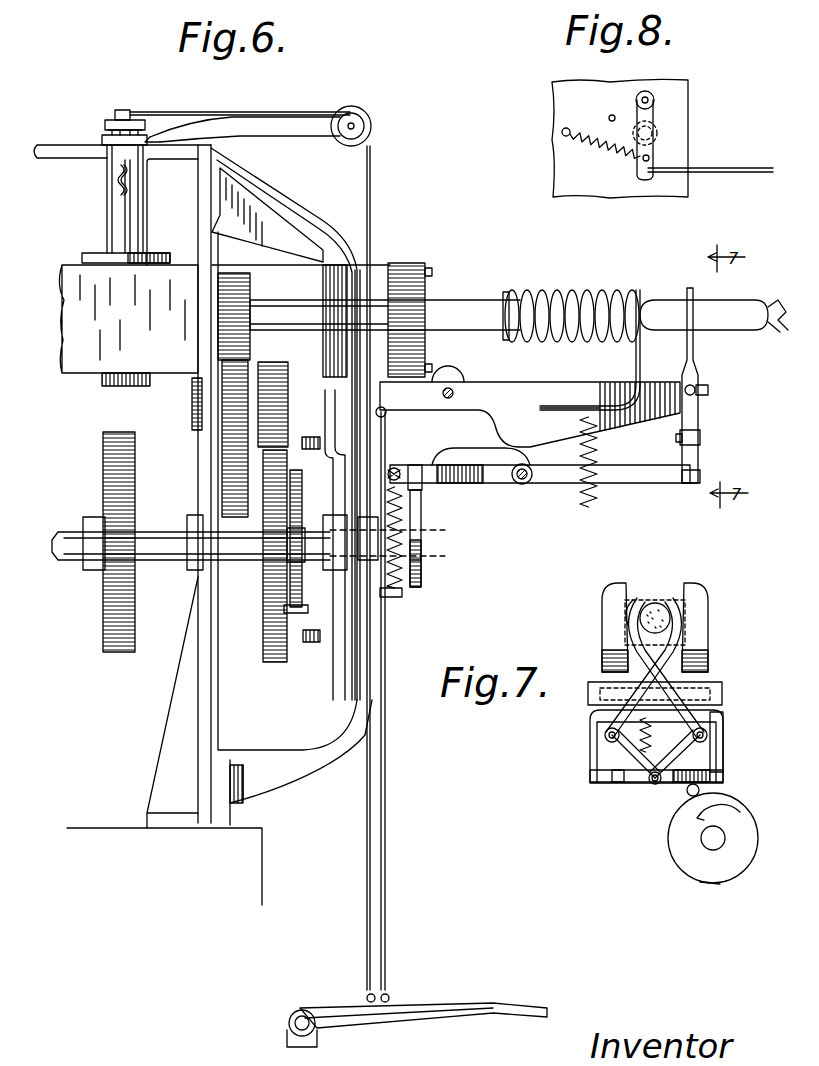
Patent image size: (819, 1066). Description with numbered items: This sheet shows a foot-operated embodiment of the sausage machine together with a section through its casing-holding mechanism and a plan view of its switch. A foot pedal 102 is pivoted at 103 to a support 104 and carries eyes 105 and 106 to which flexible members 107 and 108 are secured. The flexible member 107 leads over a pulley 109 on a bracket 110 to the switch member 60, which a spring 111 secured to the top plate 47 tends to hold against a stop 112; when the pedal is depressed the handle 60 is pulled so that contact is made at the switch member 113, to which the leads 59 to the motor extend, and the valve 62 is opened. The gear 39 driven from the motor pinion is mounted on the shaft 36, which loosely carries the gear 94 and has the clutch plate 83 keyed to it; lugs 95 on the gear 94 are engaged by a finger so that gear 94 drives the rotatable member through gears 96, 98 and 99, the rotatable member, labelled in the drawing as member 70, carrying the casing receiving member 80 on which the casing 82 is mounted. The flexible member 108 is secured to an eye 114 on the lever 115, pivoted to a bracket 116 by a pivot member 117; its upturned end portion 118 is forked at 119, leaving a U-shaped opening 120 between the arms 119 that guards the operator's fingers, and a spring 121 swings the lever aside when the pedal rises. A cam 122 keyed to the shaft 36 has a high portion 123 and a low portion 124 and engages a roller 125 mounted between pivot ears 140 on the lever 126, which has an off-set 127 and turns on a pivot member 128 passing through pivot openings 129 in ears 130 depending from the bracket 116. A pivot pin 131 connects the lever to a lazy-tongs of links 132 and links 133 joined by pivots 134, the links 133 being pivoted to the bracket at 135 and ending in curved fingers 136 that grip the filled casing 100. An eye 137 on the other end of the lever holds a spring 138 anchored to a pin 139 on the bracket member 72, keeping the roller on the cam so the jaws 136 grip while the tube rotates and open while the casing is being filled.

In FIG. 6, the shaft 36 is at (150, 535).
In FIG. 7, the shaft 36 is at (708, 843).
In FIG. 6, the gear 39 is at (136, 460).
In FIG. 8, the top plate 47 is at (562, 100).
In FIG. 6, the leads 59 is at (118, 185).
In FIG. 6, the switch member 60 is at (130, 118).
In FIG. 8, the switch member 60 is at (650, 116).
In FIG. 6, the valve 62 is at (140, 252).
In FIG. 6, the shaft 70 is at (278, 290).
In FIG. 6, the bracket member 72 is at (370, 628).
In FIG. 6, the casing receiving member 80 is at (455, 300).
In FIG. 6, the casing 82 is at (575, 290).
In FIG. 6, the clutch plate 83 is at (290, 562).
In FIG. 6, the gear 94 is at (276, 560).
In FIG. 6, the lugs 95 is at (308, 436).
In FIG. 6, the gear 96 is at (288, 368).
In FIG. 6, the gear 98 is at (192, 400).
In FIG. 6, the gear 99 is at (237, 276).
In FIG. 6, the casing 100 is at (735, 306).
In FIG. 7, the casing 100 is at (660, 605).
In FIG. 6, the foot pedal 102 is at (438, 1003).
In FIG. 6, the pivot 103 is at (300, 1024).
In FIG. 6, the support 104 is at (315, 1044).
In FIG. 6, the eye 105 is at (368, 993).
In FIG. 6, the eye 106 is at (390, 993).
In FIG. 6, the flexible member 107 is at (190, 112).
In FIG. 8, the flexible member 107 is at (722, 168).
In FIG. 6, the flexible member 108 is at (385, 826).
In FIG. 6, the pulley 109 is at (362, 114).
In FIG. 6, the bracket 110 is at (288, 118).
In FIG. 8, the spring 111 is at (595, 145).
In FIG. 8, the stop 112 is at (612, 114).
In FIG. 6, the switch member 113 is at (128, 145).
In FIG. 8, the switch member 113 is at (658, 135).
In FIG. 6, the eye 114 is at (386, 414).
In FIG. 6, the lever 115 is at (535, 408).
In FIG. 6, the bracket 116 is at (500, 392).
In FIG. 7, the bracket 116 is at (608, 686).
In FIG. 6, the pivot member 117 is at (450, 386).
In FIG. 6, the upturned end portion 118 is at (636, 364).
In FIG. 7, the forked arms 119 is at (610, 600).
In FIG. 7, the U-shaped opening 120 is at (648, 595).
In FIG. 6, the spring 121 is at (598, 497).
In FIG. 6, the cam 122 is at (421, 538).
In FIG. 7, the cam 122 is at (684, 838).
In FIG. 7, the high portion 123 is at (690, 797).
In FIG. 7, the low portion 124 is at (720, 884).
In FIG. 6, the roller 125 is at (422, 486).
In FIG. 6, the lever 126 is at (500, 484).
In FIG. 6, the off-set 127 is at (468, 484).
In FIG. 7, the off-set 127 is at (722, 740).
In FIG. 6, the pivot member 128 is at (528, 490).
In FIG. 7, the pivot member 128 is at (640, 770).
In FIG. 7, the pivot openings 129 is at (590, 772).
In FIG. 6, the ears 130 is at (528, 482).
In FIG. 7, the ears 130 is at (590, 745).
In FIG. 6, the pivot pin 131 is at (702, 476).
In FIG. 7, the pivot pin 131 is at (652, 786).
In FIG. 6, the links 132 is at (700, 448).
In FIG. 7, the links 132 is at (690, 775).
In FIG. 6, the links 133 is at (696, 404).
In FIG. 7, the links 133 is at (680, 718).
In FIG. 6, the pivots 134 is at (700, 432).
In FIG. 7, the pivots 134 is at (708, 732).
In FIG. 6, the pivot 135 is at (708, 390).
In FIG. 7, the pivot 135 is at (690, 655).
In FIG. 6, the curved fingers 136 is at (688, 306).
In FIG. 7, the curved fingers 136 is at (678, 617).
In FIG. 6, the eye 137 is at (394, 468).
In FIG. 6, the spring 138 is at (421, 560).
In FIG. 7, the spring 138 is at (640, 778).
In FIG. 6, the pin 139 is at (392, 598).
In FIG. 6, the pivot ears 140 is at (440, 456).